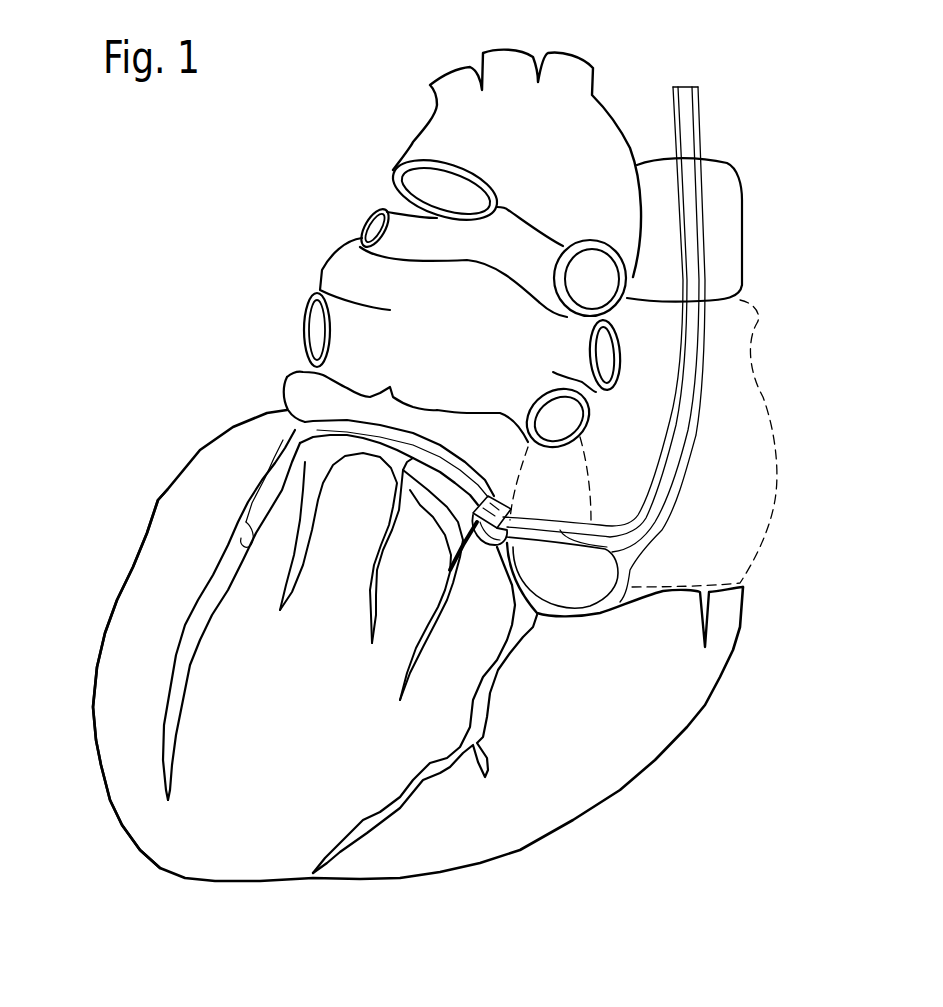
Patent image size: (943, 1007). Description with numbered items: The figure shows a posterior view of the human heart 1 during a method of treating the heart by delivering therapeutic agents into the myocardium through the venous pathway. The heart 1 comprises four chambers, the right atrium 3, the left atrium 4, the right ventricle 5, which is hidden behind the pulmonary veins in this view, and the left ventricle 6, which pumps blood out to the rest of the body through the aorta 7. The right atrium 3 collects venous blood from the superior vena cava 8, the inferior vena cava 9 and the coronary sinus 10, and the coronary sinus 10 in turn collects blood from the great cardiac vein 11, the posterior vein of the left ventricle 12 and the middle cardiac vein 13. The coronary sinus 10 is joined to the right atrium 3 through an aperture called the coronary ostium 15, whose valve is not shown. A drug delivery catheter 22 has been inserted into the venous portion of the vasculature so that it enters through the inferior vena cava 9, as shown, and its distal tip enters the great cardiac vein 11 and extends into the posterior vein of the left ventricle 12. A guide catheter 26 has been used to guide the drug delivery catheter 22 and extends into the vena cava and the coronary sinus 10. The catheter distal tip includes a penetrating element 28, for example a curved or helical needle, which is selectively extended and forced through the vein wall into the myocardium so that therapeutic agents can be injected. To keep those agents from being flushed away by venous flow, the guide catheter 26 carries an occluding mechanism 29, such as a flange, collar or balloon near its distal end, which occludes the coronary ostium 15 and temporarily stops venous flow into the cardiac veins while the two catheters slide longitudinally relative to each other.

The heart 1 is at (690, 783).
The right atrium 3 is at (741, 494).
The left atrium 4 is at (450, 421).
The right ventricle 5 is at (584, 750).
The left ventricle 6 is at (117, 597).
The aorta 7 is at (433, 117).
The superior vena cava 8 is at (743, 180).
The inferior vena cava 9 is at (622, 597).
The coronary sinus 10 is at (405, 466).
The great cardiac vein 11 is at (285, 382).
The posterior vein of the left ventricle 12 is at (153, 720).
The middle cardiac vein 13 is at (510, 653).
The coronary ostium 15 is at (504, 552).
The drug delivery catheter 22 is at (705, 347).
The guide catheter 26 is at (704, 411).
The penetrating element 28 is at (240, 537).
The occluding mechanism 29 is at (485, 547).